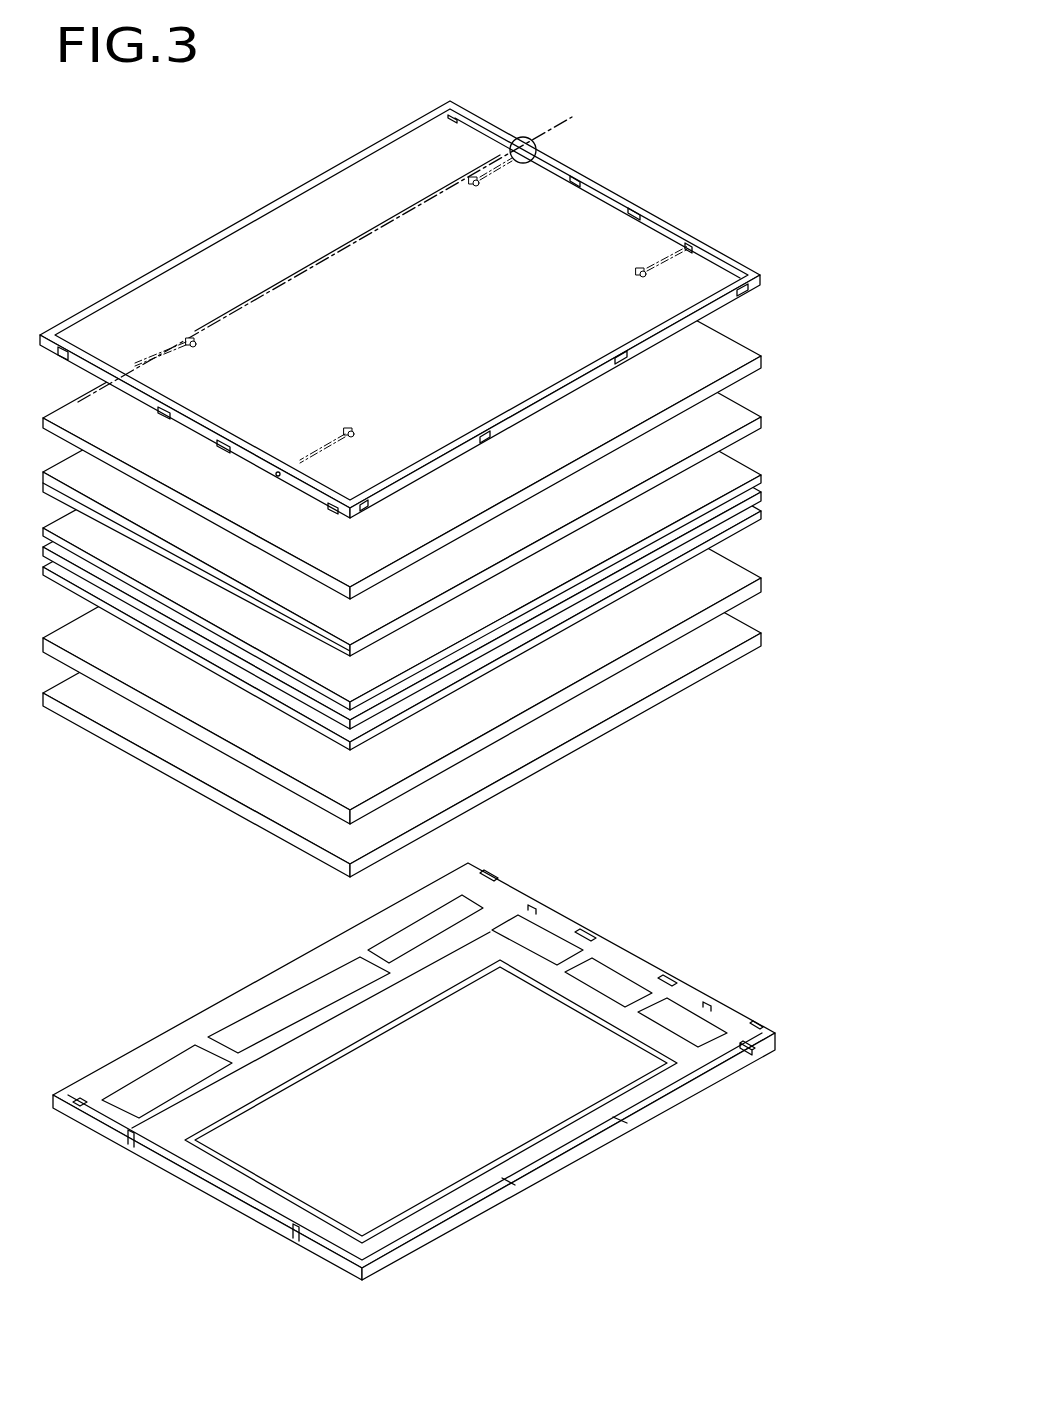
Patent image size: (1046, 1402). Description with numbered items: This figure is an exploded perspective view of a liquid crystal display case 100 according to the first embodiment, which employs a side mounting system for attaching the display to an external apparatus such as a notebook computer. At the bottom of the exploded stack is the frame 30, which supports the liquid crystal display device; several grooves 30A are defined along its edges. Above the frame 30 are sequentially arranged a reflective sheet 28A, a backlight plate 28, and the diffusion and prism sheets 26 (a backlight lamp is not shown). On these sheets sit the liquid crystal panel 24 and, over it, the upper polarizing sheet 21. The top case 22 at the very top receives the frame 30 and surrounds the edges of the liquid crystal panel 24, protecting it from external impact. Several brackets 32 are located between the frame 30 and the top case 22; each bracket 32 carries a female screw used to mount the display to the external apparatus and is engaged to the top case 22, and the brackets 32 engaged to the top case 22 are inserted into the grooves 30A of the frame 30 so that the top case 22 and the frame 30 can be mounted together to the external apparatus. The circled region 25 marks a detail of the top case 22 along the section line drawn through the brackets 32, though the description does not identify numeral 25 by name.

The liquid crystal display case 100 is at (130, 866).
The top case 22 is at (733, 248).
The fixing portion 25 is at (538, 152).
The upper polarizing sheet 21 is at (727, 353).
The liquid crystal panel 24 is at (745, 416).
The diffusion and prism sheets 26 is at (765, 518).
The backlight plate 28 is at (765, 586).
The reflective sheet 28A is at (760, 640).
The bracket 32 is at (476, 190).
The frame 30 is at (747, 1023).
The groove 30A is at (532, 908).